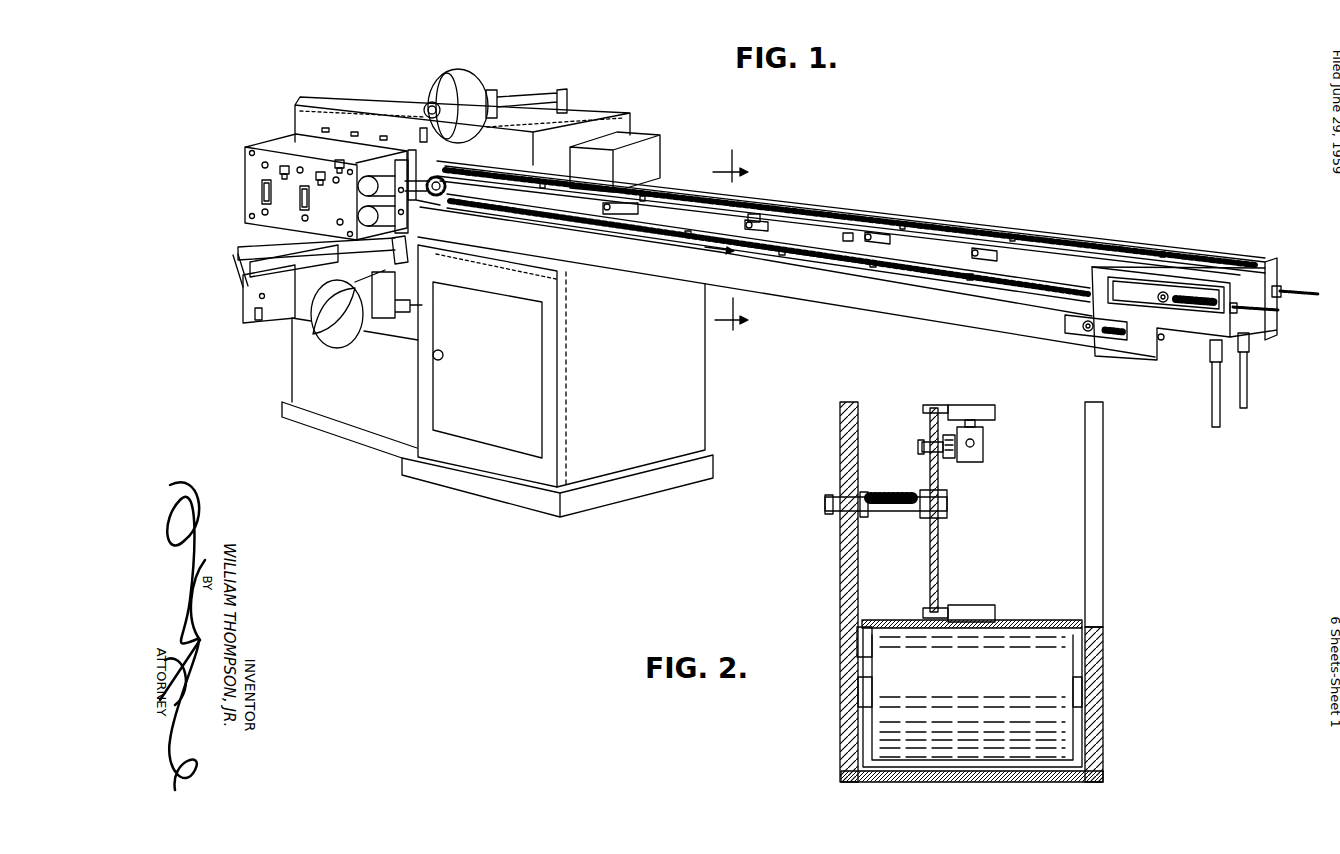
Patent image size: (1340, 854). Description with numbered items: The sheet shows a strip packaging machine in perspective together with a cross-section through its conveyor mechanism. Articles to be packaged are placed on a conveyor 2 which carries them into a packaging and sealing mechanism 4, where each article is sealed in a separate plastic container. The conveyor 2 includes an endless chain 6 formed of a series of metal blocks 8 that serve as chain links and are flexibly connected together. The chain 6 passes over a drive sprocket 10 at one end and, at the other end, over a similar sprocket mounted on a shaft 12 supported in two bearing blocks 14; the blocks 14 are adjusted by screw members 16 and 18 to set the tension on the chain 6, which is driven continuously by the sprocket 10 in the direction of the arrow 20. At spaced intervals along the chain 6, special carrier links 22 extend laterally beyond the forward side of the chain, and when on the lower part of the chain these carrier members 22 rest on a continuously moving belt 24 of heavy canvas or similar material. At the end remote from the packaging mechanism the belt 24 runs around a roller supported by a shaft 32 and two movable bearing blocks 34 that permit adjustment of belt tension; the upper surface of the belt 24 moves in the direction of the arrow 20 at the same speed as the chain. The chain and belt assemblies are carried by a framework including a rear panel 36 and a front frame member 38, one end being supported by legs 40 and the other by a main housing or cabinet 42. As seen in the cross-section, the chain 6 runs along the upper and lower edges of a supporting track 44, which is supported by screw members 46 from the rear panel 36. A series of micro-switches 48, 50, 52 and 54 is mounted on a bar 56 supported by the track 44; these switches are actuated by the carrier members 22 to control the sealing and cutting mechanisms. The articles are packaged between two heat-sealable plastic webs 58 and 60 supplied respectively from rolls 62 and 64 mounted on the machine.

In FIG. 1, the conveyor 2 is at (1106, 222).
In FIG. 1, the packaging and sealing mechanism 4 is at (236, 149).
In FIG. 1, the endless chain 6 is at (830, 208).
In FIG. 2, the endless chain 6 is at (938, 406).
In FIG. 1, the metal blocks 8 is at (763, 216).
In FIG. 1, the drive sprocket 10 is at (447, 168).
In FIG. 1, the shaft 12 is at (1163, 302).
In FIG. 1, the bearing blocks 14 is at (1160, 302).
In FIG. 1, the screw member 16 is at (1283, 288).
In FIG. 1, the screw member 18 is at (1233, 323).
In FIG. 1, the arrow 20 is at (741, 259).
In FIG. 1, the carrier links 22 is at (895, 215).
In FIG. 2, the carrier links 22 is at (978, 406).
In FIG. 1, the belt 24 is at (656, 238).
In FIG. 2, the belt 24 is at (1030, 622).
In FIG. 1, the shaft 32 is at (1078, 335).
In FIG. 1, the movable bearing blocks 34 is at (1094, 338).
In FIG. 2, the rear panel 36 is at (840, 572).
In FIG. 1, the front frame member 38 is at (833, 300).
In FIG. 2, the front frame member 38 is at (1103, 660).
In FIG. 1, the legs 40 is at (1211, 405).
In FIG. 1, the main housing or cabinet 42 is at (610, 368).
In FIG. 2, the supporting track 44 is at (938, 550).
In FIG. 2, the screw members 46 is at (893, 497).
In FIG. 1, the switch 48 is at (634, 200).
In FIG. 1, the switch 50 is at (773, 220).
In FIG. 2, the switch 50 is at (985, 443).
In FIG. 1, the switch 52 is at (874, 230).
In FIG. 1, the switch 54 is at (982, 248).
In FIG. 1, the bar 56 is at (848, 240).
In FIG. 2, the bar 56 is at (950, 460).
In FIG. 1, the plastic web 58 is at (438, 150).
In FIG. 1, the plastic web 60 is at (410, 252).
In FIG. 1, the roll 62 is at (472, 82).
In FIG. 1, the roll 64 is at (356, 346).